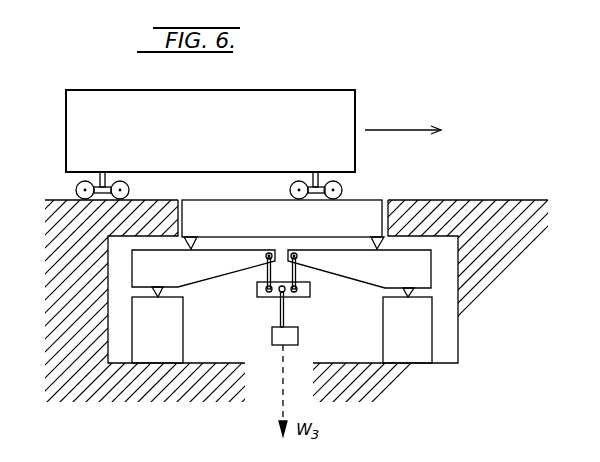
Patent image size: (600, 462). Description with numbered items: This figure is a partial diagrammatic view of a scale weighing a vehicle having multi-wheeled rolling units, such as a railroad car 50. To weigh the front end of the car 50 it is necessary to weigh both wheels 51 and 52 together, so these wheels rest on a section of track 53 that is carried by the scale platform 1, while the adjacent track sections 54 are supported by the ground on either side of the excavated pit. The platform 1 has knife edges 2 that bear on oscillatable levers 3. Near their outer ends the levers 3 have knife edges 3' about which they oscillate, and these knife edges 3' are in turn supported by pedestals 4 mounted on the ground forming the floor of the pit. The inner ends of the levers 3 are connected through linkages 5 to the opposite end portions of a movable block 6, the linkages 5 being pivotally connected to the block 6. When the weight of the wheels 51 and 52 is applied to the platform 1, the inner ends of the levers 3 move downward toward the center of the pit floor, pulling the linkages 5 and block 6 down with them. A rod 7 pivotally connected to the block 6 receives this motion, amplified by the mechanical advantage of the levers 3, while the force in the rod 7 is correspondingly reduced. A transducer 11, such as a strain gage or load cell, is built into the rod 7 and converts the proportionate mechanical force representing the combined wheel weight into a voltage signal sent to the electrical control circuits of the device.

The car 50 is at (75, 118).
The wheel 51 is at (343, 188).
The wheel 52 is at (290, 190).
The section of track 53 is at (212, 190).
The track sections 54 is at (58, 202).
The knife edges 2 is at (192, 238).
The platform 1 is at (284, 238).
The levers 3 is at (281, 275).
The knife edges 3' is at (282, 297).
The pedestals 4 is at (170, 326).
The linkages 5 is at (264, 278).
The movable block 6 is at (261, 297).
The rod 7 is at (285, 311).
The transducer 11 is at (275, 334).